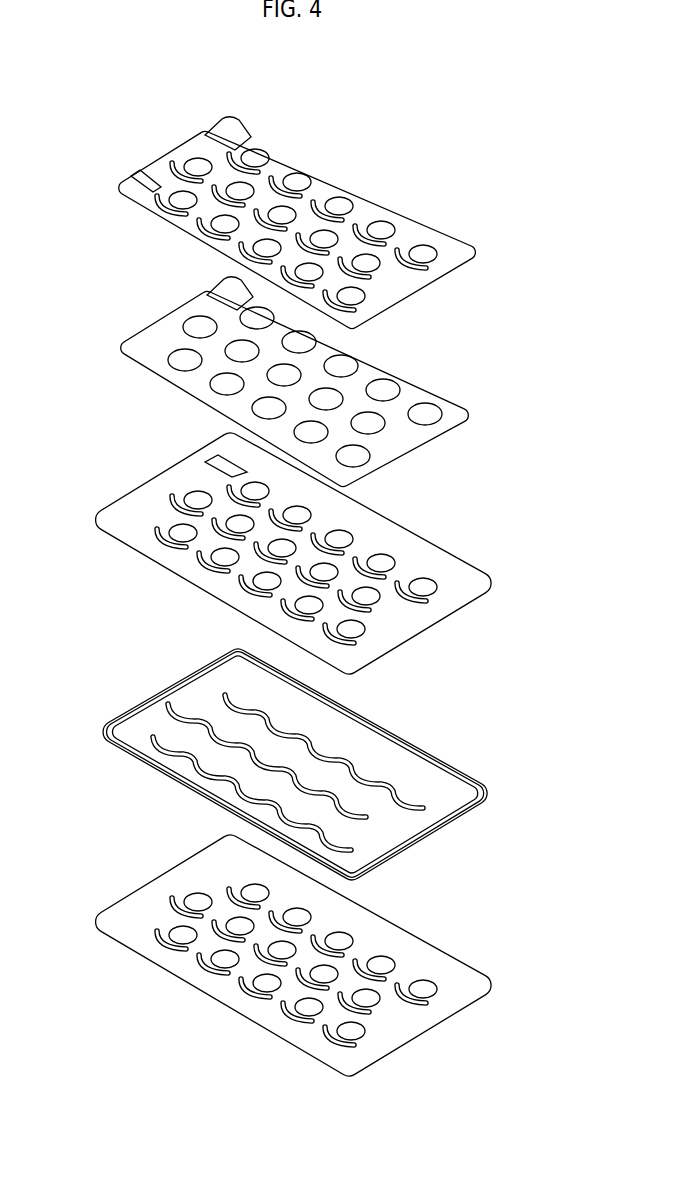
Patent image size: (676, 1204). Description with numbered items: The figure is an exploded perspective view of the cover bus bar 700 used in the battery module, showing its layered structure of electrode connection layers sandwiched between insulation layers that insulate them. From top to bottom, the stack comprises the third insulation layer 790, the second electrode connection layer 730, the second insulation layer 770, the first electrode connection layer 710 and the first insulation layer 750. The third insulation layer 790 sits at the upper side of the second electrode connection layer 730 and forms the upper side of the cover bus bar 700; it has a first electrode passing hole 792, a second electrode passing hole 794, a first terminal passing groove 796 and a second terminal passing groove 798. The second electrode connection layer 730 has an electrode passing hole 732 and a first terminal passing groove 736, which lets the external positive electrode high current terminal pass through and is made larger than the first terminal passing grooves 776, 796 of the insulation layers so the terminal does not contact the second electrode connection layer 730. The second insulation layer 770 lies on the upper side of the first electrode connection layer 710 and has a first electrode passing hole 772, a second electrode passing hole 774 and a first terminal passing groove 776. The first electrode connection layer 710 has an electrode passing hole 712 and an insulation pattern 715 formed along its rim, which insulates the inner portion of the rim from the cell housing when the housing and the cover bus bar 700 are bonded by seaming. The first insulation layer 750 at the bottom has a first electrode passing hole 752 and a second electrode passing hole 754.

The cover bus bar 700 is at (58, 120).
The third insulation layer 790 is at (325, 205).
The first electrode passing hole 792 is at (268, 152).
The second electrode passing hole 794 is at (242, 160).
The first terminal passing groove 796 is at (220, 132).
The second terminal passing groove 798 is at (148, 183).
The second electrode connection layer 730 is at (334, 373).
The electrode passing hole 732 is at (183, 350).
The first terminal passing groove 736 is at (226, 288).
The second insulation layer 770 is at (330, 540).
The first electrode passing hole 772 is at (196, 491).
The second electrode passing hole 774 is at (176, 527).
The first terminal passing groove 776 is at (212, 462).
The first electrode connection layer 710 is at (326, 749).
The electrode passing hole 712 is at (165, 705).
The insulation pattern 715 is at (198, 668).
The first insulation layer 750 is at (330, 955).
The first electrode passing hole 752 is at (196, 893).
The second electrode passing hole 754 is at (175, 928).